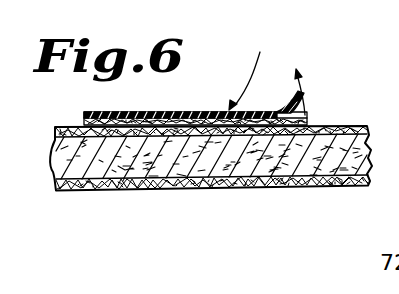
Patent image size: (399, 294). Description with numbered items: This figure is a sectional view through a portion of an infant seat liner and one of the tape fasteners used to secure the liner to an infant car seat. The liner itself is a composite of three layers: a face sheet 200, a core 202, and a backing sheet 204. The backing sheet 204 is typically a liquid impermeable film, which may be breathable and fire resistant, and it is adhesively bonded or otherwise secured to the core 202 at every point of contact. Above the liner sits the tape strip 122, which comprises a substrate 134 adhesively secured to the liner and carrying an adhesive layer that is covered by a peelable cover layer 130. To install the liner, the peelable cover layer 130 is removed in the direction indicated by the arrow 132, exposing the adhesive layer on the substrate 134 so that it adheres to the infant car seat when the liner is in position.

The face sheet 200 is at (194, 184).
The core 202 is at (56, 161).
The backing sheet 204 is at (56, 131).
The peelable cover layer 130 is at (184, 111).
The upper tape strip 122 is at (259, 70).
The arrow 132 is at (304, 114).
The substrate 134 is at (309, 113).